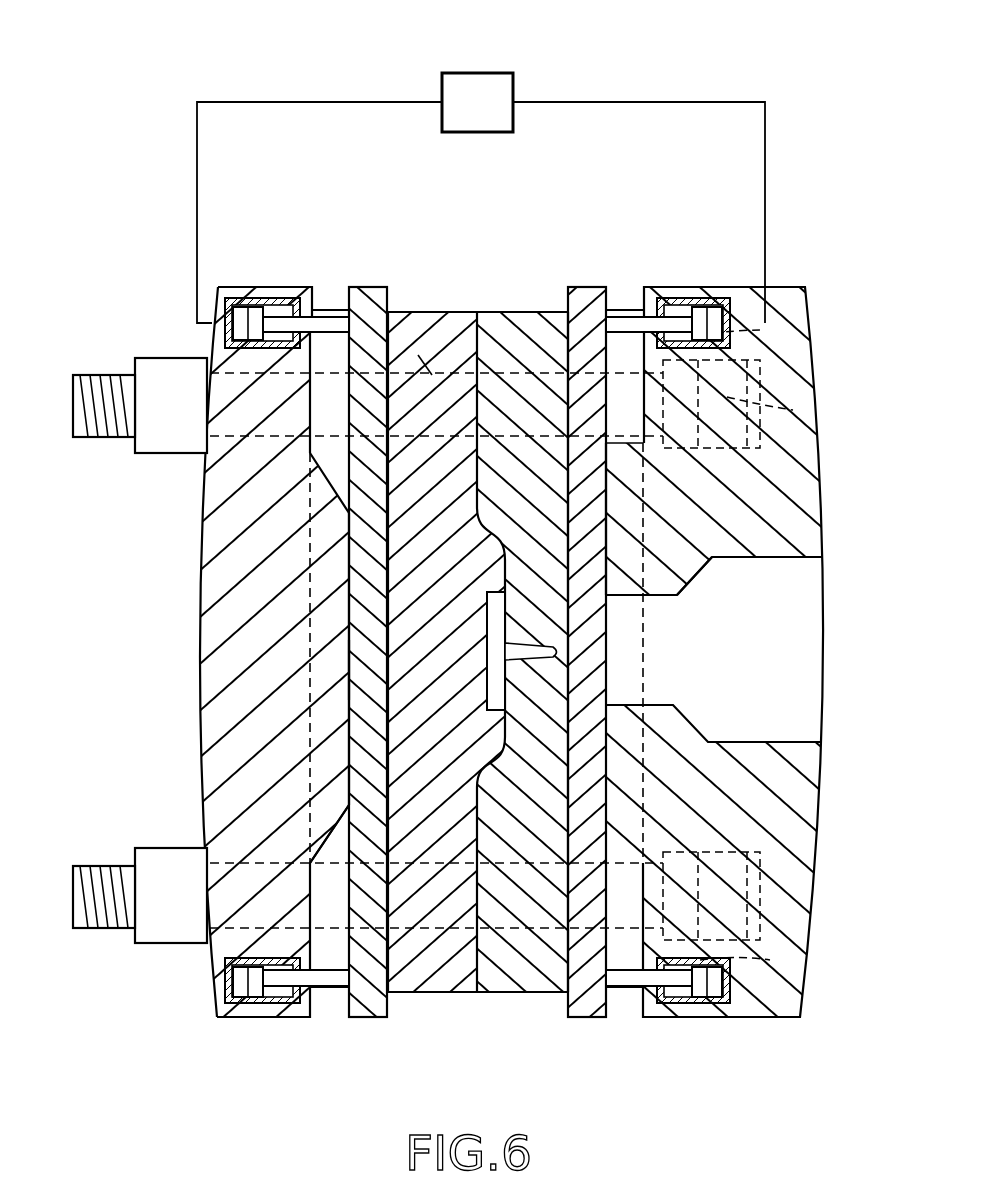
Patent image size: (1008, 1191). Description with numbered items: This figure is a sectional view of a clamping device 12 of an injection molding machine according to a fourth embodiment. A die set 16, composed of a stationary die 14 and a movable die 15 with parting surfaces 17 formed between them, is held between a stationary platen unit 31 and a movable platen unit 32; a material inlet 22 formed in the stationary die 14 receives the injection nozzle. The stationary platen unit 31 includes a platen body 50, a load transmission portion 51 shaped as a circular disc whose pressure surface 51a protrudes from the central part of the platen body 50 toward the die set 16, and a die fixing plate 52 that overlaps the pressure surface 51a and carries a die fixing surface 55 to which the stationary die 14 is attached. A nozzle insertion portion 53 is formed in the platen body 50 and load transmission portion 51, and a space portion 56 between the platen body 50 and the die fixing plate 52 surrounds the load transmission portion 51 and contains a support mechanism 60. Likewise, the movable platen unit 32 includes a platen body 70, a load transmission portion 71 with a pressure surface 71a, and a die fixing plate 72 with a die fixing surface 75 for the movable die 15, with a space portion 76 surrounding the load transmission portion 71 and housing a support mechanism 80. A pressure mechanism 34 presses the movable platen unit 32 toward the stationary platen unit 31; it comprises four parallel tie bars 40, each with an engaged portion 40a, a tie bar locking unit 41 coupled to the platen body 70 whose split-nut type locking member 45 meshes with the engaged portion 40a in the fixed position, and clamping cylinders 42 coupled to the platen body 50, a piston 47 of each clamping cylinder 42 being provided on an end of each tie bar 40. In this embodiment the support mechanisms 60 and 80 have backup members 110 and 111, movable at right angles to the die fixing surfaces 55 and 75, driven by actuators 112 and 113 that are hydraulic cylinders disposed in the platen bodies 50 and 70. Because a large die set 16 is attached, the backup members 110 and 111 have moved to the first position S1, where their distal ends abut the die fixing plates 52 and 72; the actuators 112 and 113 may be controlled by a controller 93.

The clamping device 12 is at (577, 192).
The stationary die 14 is at (510, 338).
The movable die 15 is at (432, 338).
The die set 16 is at (533, 625).
The parting surfaces 17 is at (482, 995).
The material inlet 22 is at (555, 650).
The stationary platen unit 31 is at (676, 610).
The movable platen unit 32 is at (279, 621).
The pressure mechanism 34 is at (423, 366).
The tie bars 40 is at (522, 365).
The engaged portion 40a is at (110, 392).
The tie bar locking unit 41 is at (123, 653).
The clamping cylinders 42 is at (772, 325).
The locking member 45 is at (188, 375).
The piston 47 is at (762, 408).
The platen body 50 is at (733, 652).
The load transmission portion 51 is at (625, 535).
The pressure surface 51a is at (700, 585).
The die fixing plate 52 is at (592, 750).
The nozzle insertion portion 53 is at (747, 742).
The die fixing surface 55 is at (580, 497).
The space portion 56 is at (625, 460).
The support mechanism 60 is at (696, 639).
The platen body 70 is at (247, 652).
The load transmission portion 71 is at (330, 625).
The pressure surface 71a is at (362, 672).
The die fixing plate 72 is at (362, 735).
The die fixing surface 75 is at (362, 582).
The space portion 76 is at (330, 465).
The support mechanism 80 is at (298, 292).
The controller 93 is at (476, 72).
The backup member 110 is at (630, 318).
The backup member 111 is at (325, 318).
The actuator 112 is at (713, 298).
The actuator 113 is at (240, 305).
The first position S1 is at (477, 648).